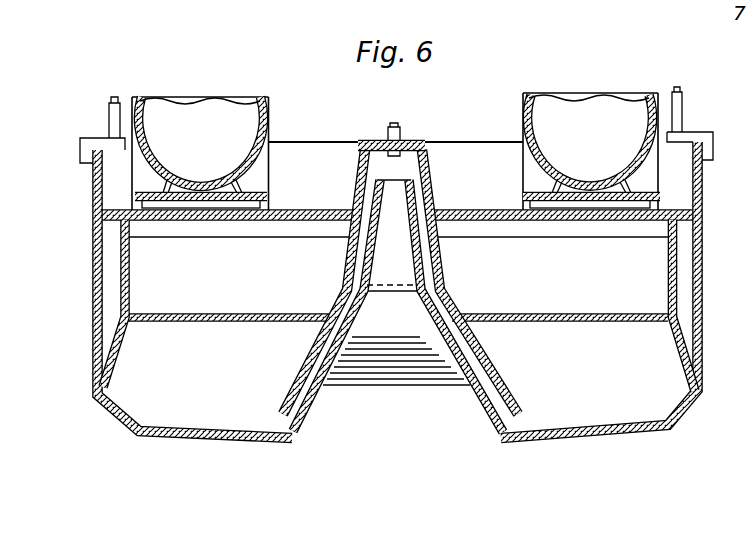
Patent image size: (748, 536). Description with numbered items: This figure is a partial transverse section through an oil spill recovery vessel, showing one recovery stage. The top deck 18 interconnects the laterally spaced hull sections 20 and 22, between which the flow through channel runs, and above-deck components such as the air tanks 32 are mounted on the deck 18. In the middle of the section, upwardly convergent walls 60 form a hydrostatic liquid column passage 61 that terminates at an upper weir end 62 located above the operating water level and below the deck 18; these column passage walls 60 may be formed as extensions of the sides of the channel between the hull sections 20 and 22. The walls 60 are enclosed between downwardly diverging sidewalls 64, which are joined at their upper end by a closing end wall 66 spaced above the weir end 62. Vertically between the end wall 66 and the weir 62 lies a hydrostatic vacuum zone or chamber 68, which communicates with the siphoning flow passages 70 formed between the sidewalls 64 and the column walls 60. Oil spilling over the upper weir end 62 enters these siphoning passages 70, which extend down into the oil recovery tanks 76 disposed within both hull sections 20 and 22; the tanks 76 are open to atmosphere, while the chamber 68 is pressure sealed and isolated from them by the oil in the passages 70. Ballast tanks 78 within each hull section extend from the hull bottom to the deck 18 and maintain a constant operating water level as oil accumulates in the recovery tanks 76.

The top deck 18 is at (488, 142).
The hull section 20 is at (118, 420).
The hull section 22 is at (640, 433).
The air tanks 32 is at (655, 121).
The upwardly convergent walls 60 is at (412, 263).
The hydrostatic liquid column passage 61 is at (397, 238).
The upper weir end 62 is at (367, 148).
The downwardly diverging sidewalls 64 is at (352, 193).
The closing end wall 66 is at (412, 142).
The hydrostatic vacuum chamber 68 is at (409, 163).
The siphoning flow passages 70 is at (478, 357).
The oil recovery tanks 76 is at (555, 312).
The ballast tanks 78 is at (106, 278).